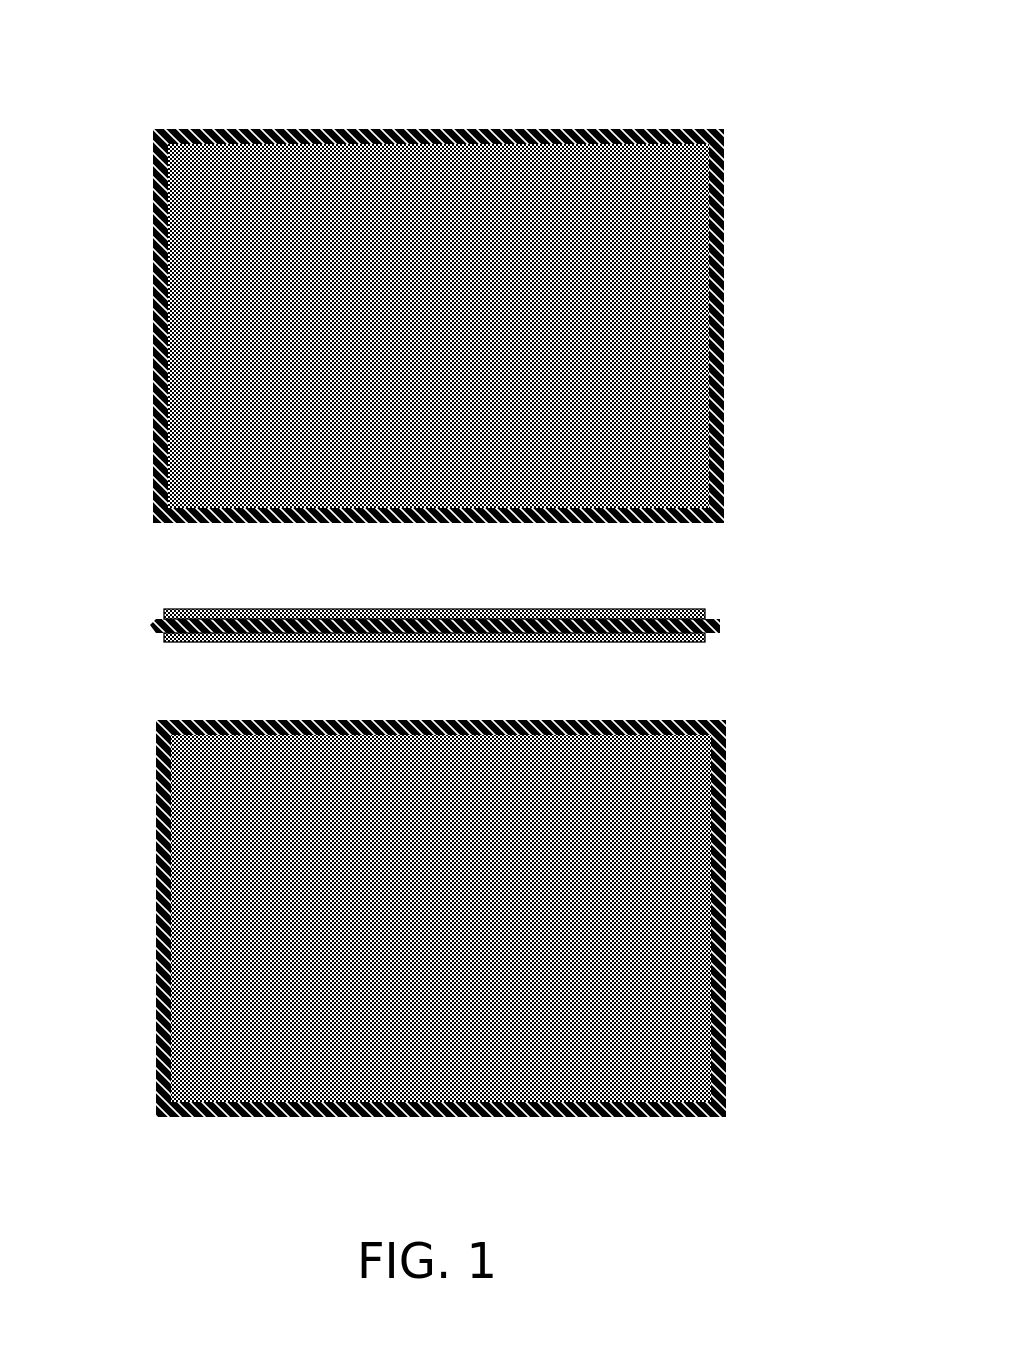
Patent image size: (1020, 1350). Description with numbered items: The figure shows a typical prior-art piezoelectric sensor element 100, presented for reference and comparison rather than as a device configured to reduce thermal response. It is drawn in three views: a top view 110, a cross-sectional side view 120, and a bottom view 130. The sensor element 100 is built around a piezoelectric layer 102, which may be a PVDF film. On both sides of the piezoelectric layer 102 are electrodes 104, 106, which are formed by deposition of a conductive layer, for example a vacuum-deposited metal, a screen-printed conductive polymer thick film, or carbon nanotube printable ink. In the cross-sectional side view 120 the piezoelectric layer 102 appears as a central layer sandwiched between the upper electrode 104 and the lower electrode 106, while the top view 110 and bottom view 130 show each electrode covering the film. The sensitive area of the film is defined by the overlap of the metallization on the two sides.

The piezoelectric sensor element 100 is at (427, 80).
The piezoelectric layer 102 is at (155, 247).
The electrode 104 is at (228, 457).
The electrode 106 is at (228, 640).
The top view 110 is at (663, 120).
The cross-sectional side view 120 is at (663, 602).
The bottom view 130 is at (677, 718).